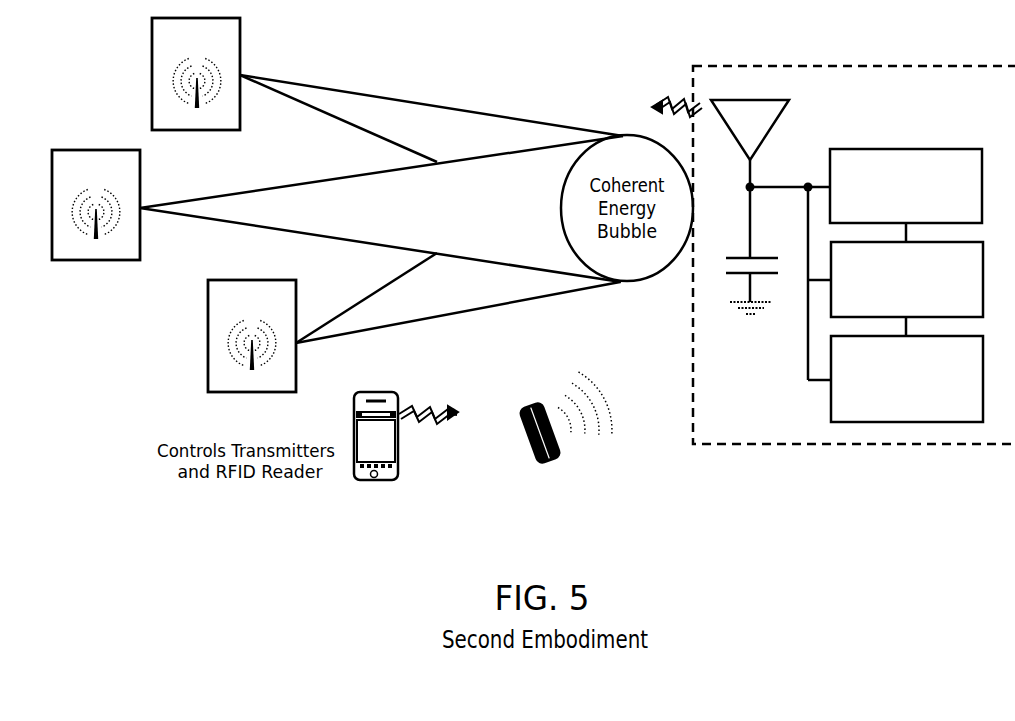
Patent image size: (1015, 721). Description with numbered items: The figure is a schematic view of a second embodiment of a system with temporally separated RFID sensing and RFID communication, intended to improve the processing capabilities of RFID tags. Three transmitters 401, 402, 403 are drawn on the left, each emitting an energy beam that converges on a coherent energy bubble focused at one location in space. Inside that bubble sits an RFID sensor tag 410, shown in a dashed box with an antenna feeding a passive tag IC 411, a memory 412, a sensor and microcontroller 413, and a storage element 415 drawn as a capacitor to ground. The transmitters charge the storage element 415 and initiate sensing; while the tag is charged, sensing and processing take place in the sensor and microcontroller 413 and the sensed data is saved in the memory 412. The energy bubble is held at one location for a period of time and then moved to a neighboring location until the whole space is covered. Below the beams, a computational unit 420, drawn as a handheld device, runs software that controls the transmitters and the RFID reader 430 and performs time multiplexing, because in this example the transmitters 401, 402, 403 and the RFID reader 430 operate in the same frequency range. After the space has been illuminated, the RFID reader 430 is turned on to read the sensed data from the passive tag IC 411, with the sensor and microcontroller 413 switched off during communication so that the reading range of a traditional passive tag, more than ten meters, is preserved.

The transmitter 401 is at (180, 47).
The transmitter 402 is at (80, 179).
The transmitter 403 is at (236, 309).
The RFID sensor tag 410 is at (926, 95).
The passive tag IC 411 is at (945, 177).
The memory 412 is at (946, 266).
The sensor and microcontroller 413 is at (946, 361).
The storage element 415 is at (772, 268).
The computational unit 420 is at (385, 481).
The RFID reader 430 is at (583, 434).